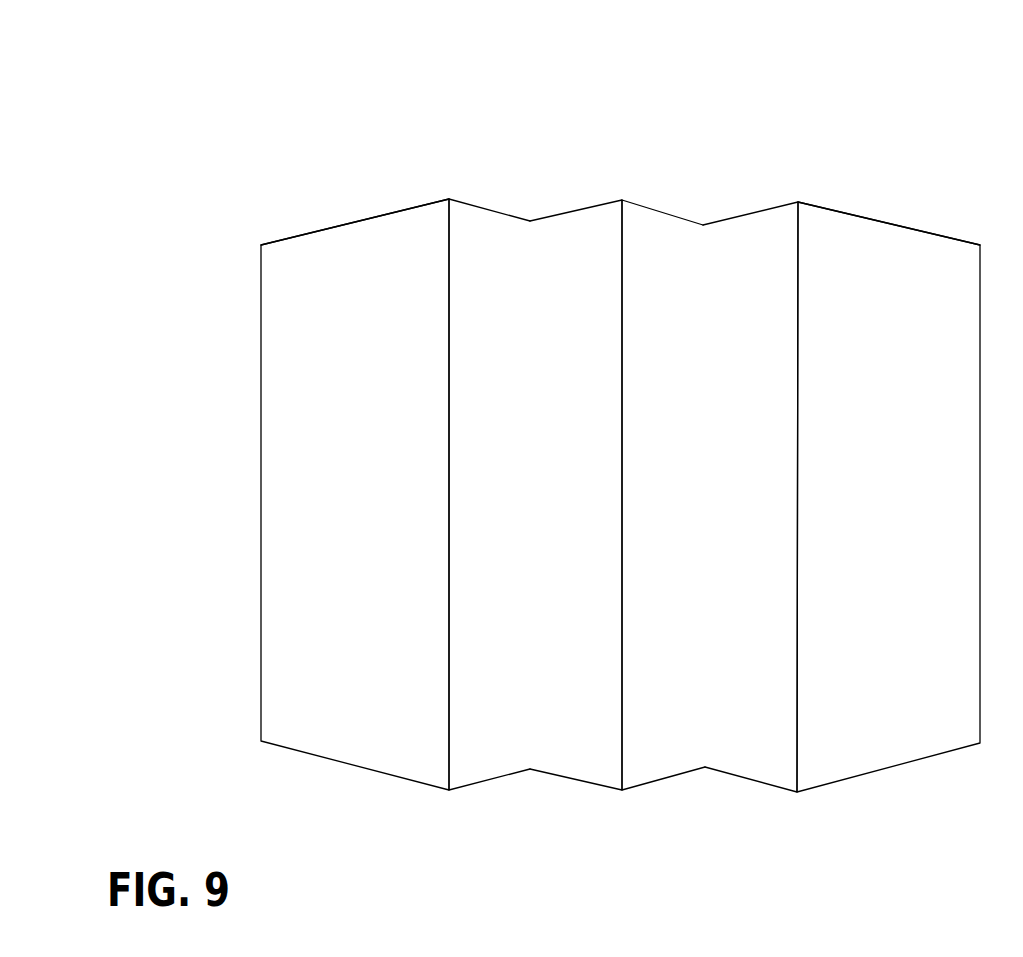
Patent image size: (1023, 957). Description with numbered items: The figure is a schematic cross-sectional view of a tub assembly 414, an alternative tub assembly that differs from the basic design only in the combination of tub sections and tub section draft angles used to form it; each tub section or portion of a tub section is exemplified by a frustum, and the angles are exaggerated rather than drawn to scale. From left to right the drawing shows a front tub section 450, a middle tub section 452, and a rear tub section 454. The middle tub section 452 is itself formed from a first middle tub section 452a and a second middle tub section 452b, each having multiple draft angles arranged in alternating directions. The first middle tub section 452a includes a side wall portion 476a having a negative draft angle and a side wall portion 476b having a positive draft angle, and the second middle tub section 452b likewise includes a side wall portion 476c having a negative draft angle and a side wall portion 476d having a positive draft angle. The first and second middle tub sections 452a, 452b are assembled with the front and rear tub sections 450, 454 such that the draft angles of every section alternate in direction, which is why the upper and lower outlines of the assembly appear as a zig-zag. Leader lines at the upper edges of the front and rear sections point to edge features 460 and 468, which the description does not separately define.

The tub assembly 414 is at (898, 86).
The front tub section 450 is at (325, 199).
The top edge of first end panel 460 is at (367, 218).
The middle tub section 452 is at (664, 119).
The first middle tub section 452a is at (535, 180).
The second middle tub section 452b is at (738, 190).
The side wall portion 476a is at (467, 203).
The side wall portion 476b is at (605, 204).
The side wall portion 476c is at (665, 212).
The side wall portion 476d is at (772, 207).
The rear tub section 454 is at (901, 192).
The top edge of second end panel 468 is at (922, 230).